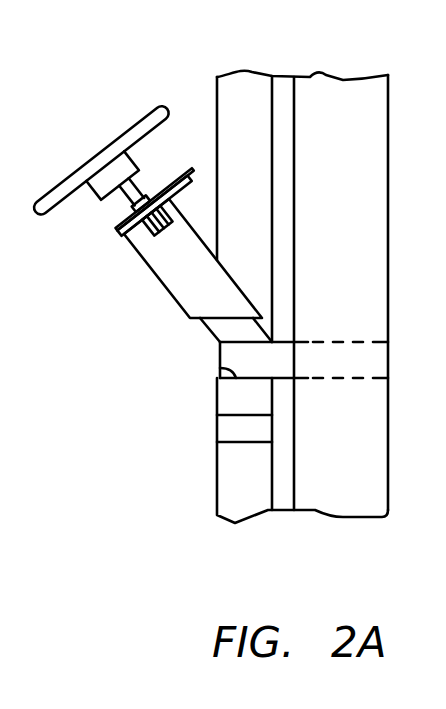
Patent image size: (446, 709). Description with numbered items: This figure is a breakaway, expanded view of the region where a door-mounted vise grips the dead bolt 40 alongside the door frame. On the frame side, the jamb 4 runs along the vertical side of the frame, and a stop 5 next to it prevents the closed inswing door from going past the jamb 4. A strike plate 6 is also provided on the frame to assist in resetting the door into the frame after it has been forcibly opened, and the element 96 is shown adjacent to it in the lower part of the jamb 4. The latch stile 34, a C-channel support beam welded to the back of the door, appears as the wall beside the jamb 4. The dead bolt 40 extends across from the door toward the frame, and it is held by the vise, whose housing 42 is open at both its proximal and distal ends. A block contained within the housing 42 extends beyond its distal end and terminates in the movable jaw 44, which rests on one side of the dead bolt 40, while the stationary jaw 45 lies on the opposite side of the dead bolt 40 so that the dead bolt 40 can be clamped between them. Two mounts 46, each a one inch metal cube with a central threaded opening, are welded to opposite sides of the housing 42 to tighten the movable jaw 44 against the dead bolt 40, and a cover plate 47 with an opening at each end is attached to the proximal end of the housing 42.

The jamb 4 is at (220, 485).
The stop 5 is at (283, 88).
The latch stile 34 is at (338, 88).
The dead bolt 40 is at (231, 360).
The housing 42 is at (133, 248).
The movable jaw 44 is at (206, 327).
The stationary jaw 45 is at (222, 369).
The mount 46 is at (184, 225).
The cover plate 47 is at (174, 201).
The strike plate 6 is at (218, 403).
The seal ring 96 is at (233, 430).